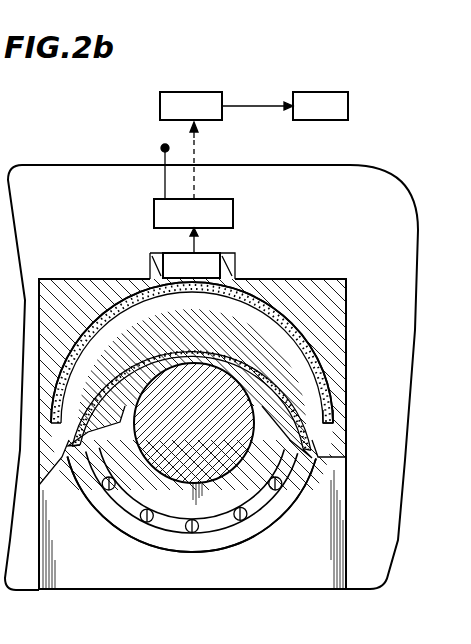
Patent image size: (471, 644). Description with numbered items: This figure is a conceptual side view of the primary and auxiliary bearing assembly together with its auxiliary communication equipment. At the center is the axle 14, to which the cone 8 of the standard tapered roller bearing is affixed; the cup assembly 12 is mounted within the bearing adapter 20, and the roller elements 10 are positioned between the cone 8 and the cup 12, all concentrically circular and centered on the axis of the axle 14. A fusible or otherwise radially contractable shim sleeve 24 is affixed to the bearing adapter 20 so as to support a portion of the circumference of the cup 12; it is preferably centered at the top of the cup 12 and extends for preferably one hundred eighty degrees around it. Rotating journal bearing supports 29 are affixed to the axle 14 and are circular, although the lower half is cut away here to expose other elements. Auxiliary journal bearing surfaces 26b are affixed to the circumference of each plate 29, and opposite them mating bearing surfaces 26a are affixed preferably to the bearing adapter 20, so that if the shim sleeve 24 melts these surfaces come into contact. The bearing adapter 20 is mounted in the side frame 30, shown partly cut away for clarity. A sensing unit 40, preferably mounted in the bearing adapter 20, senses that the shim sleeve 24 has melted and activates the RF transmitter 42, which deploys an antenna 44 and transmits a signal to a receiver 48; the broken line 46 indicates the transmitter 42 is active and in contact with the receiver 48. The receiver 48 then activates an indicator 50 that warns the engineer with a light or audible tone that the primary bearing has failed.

The cone 8 is at (165, 497).
The roller elements 10 is at (130, 498).
The cup assembly 12 is at (235, 540).
The axle 14 is at (178, 428).
The bearing adapter 20 is at (97, 283).
The shim sleeve 24 is at (86, 322).
The mating bearing surfaces 26a is at (330, 372).
The auxiliary journal bearing surfaces 26b is at (337, 417).
The rotating journal bearing supports 29 is at (173, 345).
The side frame 30 is at (312, 188).
The sensing unit 40 is at (215, 253).
The RF transmitter 42 is at (217, 196).
The antenna 44 is at (162, 153).
The broken line 46 is at (207, 158).
The receiver 48 is at (158, 106).
The indicator 50 is at (348, 106).